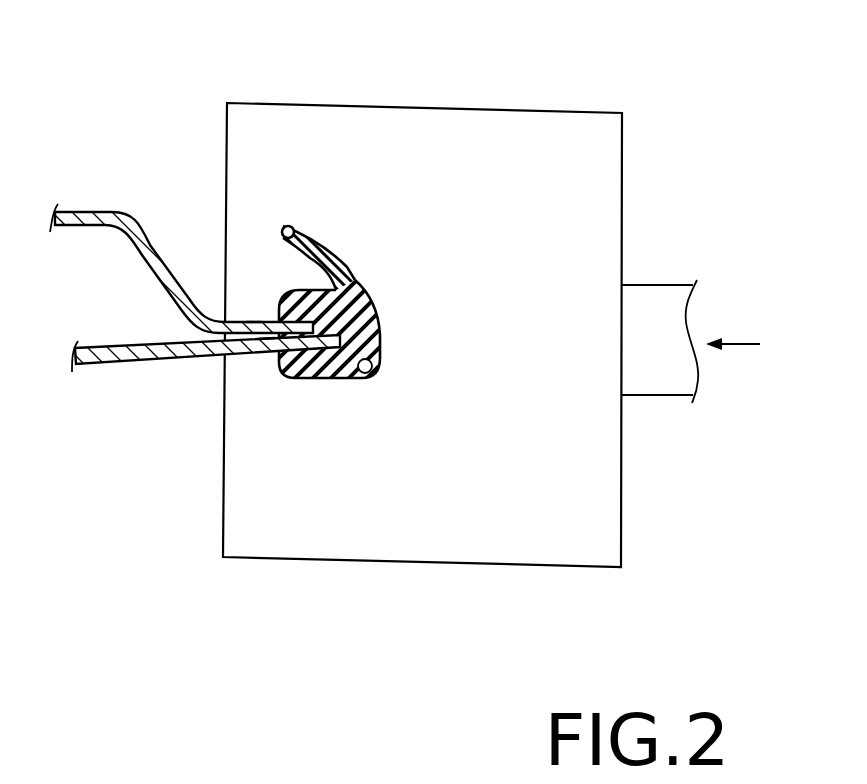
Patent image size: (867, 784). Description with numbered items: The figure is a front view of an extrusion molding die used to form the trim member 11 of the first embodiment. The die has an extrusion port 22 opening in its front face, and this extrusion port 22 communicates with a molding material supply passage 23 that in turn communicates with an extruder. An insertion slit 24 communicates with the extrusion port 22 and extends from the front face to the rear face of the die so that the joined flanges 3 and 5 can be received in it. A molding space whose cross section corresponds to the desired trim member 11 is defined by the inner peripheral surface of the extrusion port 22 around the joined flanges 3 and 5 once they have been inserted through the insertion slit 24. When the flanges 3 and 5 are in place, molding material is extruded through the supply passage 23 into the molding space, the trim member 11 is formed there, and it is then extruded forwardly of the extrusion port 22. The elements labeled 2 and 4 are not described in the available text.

The lead wire 2 is at (120, 366).
The flange 3 is at (273, 342).
The lead wire 4 is at (100, 215).
The flange 5 is at (253, 318).
The trim member 11 is at (358, 252).
The extrusion port 22 is at (543, 103).
The molding material supply passage 23 is at (660, 385).
The insertion slit 24 is at (265, 342).